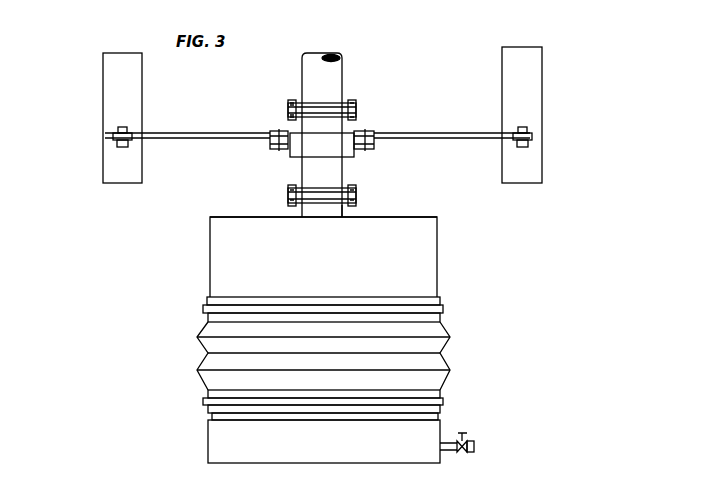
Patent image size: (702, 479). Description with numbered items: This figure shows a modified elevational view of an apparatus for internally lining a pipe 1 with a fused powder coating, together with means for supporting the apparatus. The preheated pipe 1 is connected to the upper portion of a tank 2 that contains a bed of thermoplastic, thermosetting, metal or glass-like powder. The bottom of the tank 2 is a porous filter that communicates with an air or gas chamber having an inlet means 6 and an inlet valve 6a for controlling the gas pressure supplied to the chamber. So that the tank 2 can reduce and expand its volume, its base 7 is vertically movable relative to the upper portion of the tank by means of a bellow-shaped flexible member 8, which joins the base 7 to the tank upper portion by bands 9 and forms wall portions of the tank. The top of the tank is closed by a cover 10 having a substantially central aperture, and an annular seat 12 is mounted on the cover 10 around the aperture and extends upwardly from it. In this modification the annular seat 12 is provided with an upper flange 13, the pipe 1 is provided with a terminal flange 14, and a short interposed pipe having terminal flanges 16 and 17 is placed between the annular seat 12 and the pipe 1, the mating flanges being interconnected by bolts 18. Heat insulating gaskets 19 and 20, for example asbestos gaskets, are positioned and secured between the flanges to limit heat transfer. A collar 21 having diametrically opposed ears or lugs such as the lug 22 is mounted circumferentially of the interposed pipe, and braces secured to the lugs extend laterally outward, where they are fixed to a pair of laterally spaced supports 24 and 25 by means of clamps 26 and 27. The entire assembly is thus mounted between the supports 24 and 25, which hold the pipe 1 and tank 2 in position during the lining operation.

The pipe 1 is at (330, 62).
The tank 2 is at (217, 256).
The inlet means 6 is at (468, 443).
The inlet valve 6a is at (470, 453).
The base 7 is at (212, 417).
The flexible member 8 is at (202, 347).
The band 9 is at (442, 308).
The cover 10 is at (412, 216).
The annular seat 12 is at (344, 208).
The upper flange 13 is at (272, 141).
The terminal flange 14 is at (352, 104).
The terminal flange 16 is at (356, 111).
The terminal flange 17 is at (354, 193).
The bolts 18 is at (296, 103).
The heat insulating gasket 19 is at (287, 109).
The heat insulating gasket 20 is at (287, 196).
The collar 21 is at (300, 148).
The lug 22 is at (372, 143).
The support 24 is at (106, 156).
The support 25 is at (533, 151).
The clamp 26 is at (115, 131).
The clamp 27 is at (525, 128).